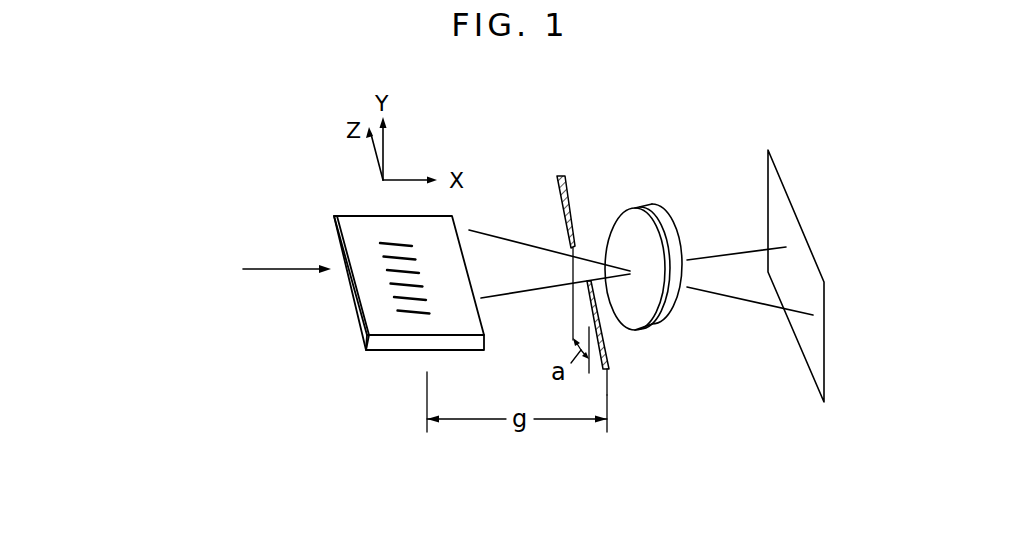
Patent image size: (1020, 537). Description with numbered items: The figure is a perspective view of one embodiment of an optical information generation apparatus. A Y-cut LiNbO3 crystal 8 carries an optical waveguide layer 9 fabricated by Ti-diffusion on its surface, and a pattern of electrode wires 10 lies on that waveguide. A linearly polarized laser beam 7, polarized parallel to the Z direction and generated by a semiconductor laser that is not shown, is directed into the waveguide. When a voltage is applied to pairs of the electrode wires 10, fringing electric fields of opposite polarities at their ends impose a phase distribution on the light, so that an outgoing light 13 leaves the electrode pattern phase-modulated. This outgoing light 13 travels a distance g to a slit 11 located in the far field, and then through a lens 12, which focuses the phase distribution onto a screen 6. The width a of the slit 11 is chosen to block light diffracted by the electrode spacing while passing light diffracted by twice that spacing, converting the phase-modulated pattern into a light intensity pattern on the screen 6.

The screen 6 is at (788, 191).
The linearly polarized laser beam 7 is at (272, 268).
The Y-cut LiNbO3 crystal 8 is at (358, 317).
The optical waveguide layer 9 is at (399, 338).
The electrode wires 10 is at (412, 243).
The slit 11 is at (566, 200).
The lens 12 is at (652, 208).
The outgoing light 13 is at (530, 292).